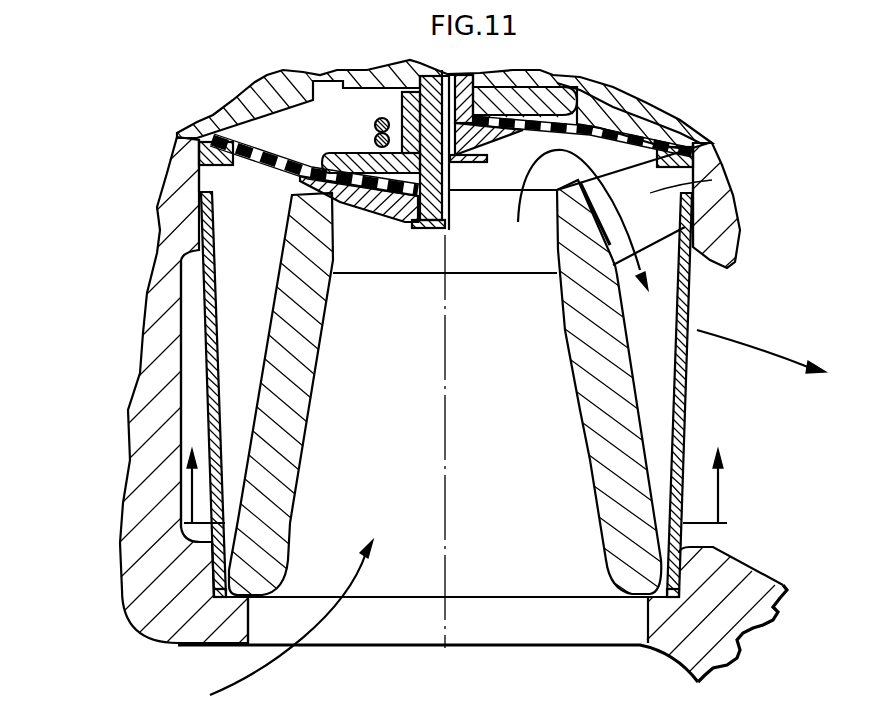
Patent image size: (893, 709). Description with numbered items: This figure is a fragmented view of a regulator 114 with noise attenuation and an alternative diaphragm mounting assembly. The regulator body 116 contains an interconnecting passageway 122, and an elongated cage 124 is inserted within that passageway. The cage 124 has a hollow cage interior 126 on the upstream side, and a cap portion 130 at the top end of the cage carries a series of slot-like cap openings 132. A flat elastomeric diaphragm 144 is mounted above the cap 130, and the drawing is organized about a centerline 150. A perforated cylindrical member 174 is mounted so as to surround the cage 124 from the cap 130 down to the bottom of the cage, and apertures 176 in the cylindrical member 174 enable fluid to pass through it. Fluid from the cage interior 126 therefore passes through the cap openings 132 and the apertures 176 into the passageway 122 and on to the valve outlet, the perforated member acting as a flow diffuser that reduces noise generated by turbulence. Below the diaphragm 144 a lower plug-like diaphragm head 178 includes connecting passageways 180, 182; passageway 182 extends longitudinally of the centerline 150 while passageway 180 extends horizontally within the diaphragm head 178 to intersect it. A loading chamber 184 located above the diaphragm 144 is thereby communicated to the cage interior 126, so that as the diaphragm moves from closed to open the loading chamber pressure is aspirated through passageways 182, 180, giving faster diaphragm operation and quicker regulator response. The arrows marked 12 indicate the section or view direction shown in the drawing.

The axial direction arrow 12 is at (457, 473).
The regulator 114 is at (157, 152).
The regulator body 116 is at (158, 308).
The passageway 122 is at (185, 353).
The cage 124 is at (292, 430).
The cage interior 126 is at (538, 482).
The cap portion 130 is at (616, 178).
The cap openings 132 is at (247, 185).
The diaphragm 144 is at (263, 123).
The centerline 150 is at (450, 522).
The perforated cylindrical member 174 is at (218, 372).
The apertures 176 is at (212, 320).
The diaphragm head 178 is at (360, 217).
The passageway 180 is at (405, 228).
The passageway 182 is at (443, 73).
The loading chamber 184 is at (355, 121).